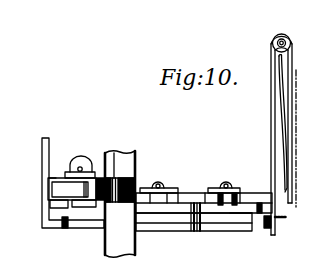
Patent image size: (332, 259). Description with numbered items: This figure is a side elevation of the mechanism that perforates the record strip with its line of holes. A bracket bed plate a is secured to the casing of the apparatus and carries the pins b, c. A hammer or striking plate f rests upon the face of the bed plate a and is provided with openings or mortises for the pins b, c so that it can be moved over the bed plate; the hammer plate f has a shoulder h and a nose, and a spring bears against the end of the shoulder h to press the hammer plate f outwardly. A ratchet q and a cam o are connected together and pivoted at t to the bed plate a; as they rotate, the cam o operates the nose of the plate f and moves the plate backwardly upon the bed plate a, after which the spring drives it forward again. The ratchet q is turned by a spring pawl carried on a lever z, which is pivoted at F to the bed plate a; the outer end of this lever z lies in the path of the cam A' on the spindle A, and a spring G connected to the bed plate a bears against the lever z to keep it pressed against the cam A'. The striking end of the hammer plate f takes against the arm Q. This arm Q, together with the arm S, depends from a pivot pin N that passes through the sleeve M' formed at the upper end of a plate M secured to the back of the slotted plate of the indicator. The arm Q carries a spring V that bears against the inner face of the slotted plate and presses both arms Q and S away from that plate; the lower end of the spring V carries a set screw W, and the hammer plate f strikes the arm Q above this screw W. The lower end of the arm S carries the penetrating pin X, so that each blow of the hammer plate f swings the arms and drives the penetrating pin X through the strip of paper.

The spindle A is at (120, 204).
The cam A' is at (120, 178).
The spring G is at (54, 188).
The bracket bed plate a is at (47, 222).
The lever z is at (52, 178).
The pivot F is at (82, 159).
The pin c is at (80, 205).
The shoulder h is at (98, 204).
The cam o is at (168, 210).
The pivot t is at (159, 178).
The ratchet q is at (191, 203).
The pin b is at (237, 200).
The hammer plate f is at (237, 208).
The arm Q is at (271, 164).
The plate M is at (294, 119).
The sleeve M' is at (269, 29).
The pivot pin N is at (290, 43).
The arm S is at (288, 78).
The spring V is at (287, 118).
The penetrating pin X is at (296, 198).
The set screw W is at (277, 219).